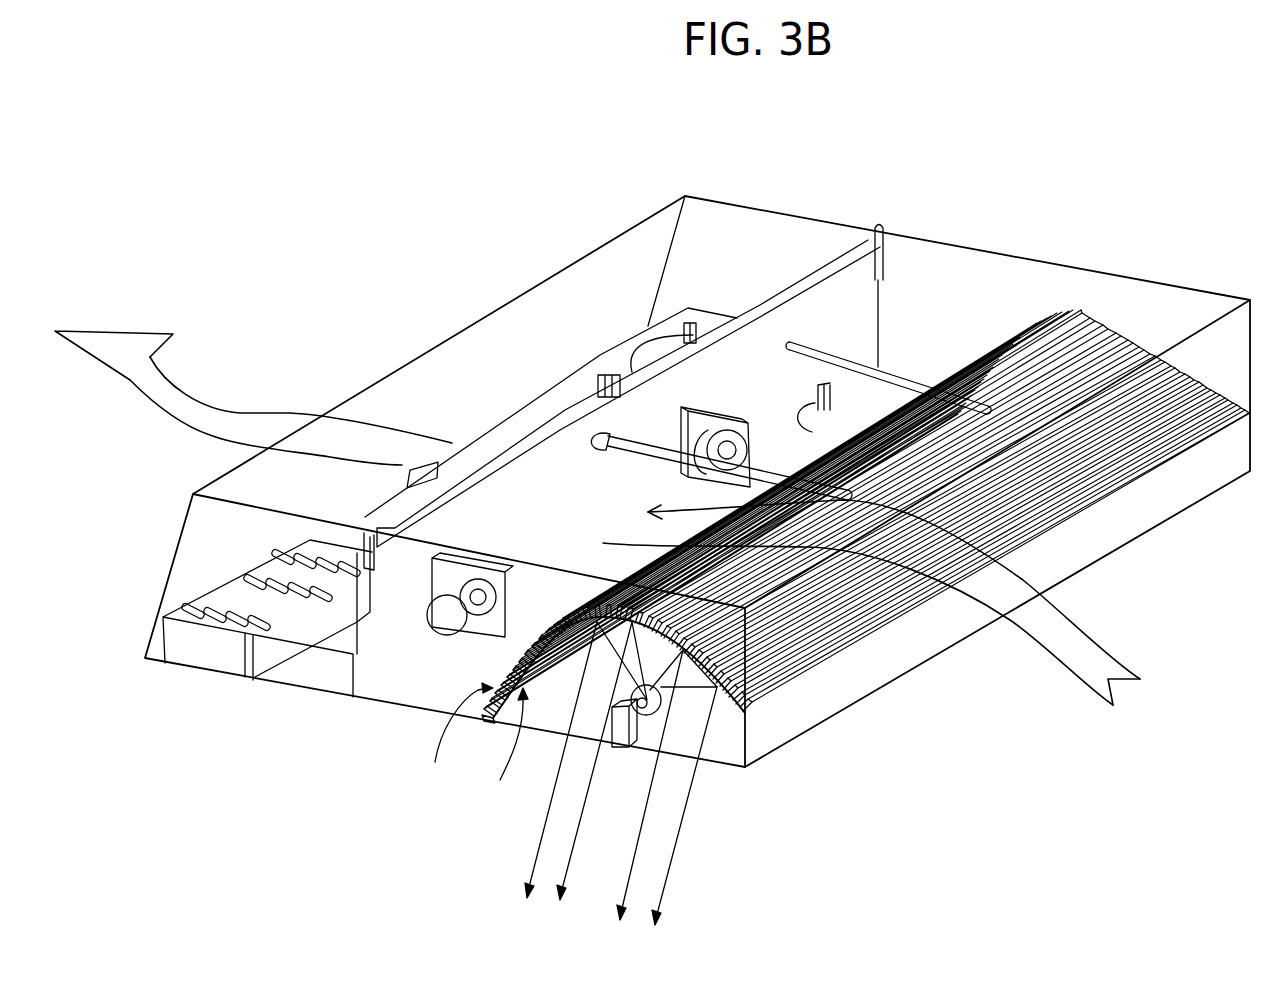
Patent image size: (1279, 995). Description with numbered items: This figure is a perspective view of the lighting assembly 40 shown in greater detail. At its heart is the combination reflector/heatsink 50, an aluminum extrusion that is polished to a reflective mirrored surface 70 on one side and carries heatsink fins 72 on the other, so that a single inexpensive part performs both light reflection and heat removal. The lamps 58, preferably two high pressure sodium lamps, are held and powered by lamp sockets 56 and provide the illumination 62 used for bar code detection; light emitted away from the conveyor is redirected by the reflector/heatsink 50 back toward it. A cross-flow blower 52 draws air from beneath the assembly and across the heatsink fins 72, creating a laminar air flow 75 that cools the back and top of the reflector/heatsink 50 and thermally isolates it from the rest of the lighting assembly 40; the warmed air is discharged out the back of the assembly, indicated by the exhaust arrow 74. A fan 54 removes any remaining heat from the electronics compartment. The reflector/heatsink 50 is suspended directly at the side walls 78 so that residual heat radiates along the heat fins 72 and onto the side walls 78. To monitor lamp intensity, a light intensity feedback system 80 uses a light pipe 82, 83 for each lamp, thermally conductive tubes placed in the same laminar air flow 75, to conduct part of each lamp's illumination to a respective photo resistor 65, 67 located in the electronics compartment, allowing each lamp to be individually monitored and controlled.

The lighting assembly 40 is at (1055, 204).
The combination reflector/heatsink 50 is at (1140, 463).
The cross-flow blower 52 is at (463, 632).
The fan 54 is at (692, 330).
The lamp sockets 56 is at (623, 737).
The lamps 58 is at (670, 690).
The illumination 62 is at (670, 867).
The photo resistor 65 is at (588, 430).
The photo resistor 67 is at (776, 340).
The reflective mirrored surface 70 is at (504, 751).
The heatsink fins 72 is at (455, 738).
The exhaust vent 74 is at (290, 413).
The laminar air flow 75 is at (925, 293).
The side walls 78 is at (1188, 312).
The light intensity feedback system 80 is at (592, 322).
The light pipe 82 is at (728, 438).
The light pipe 83 is at (920, 373).